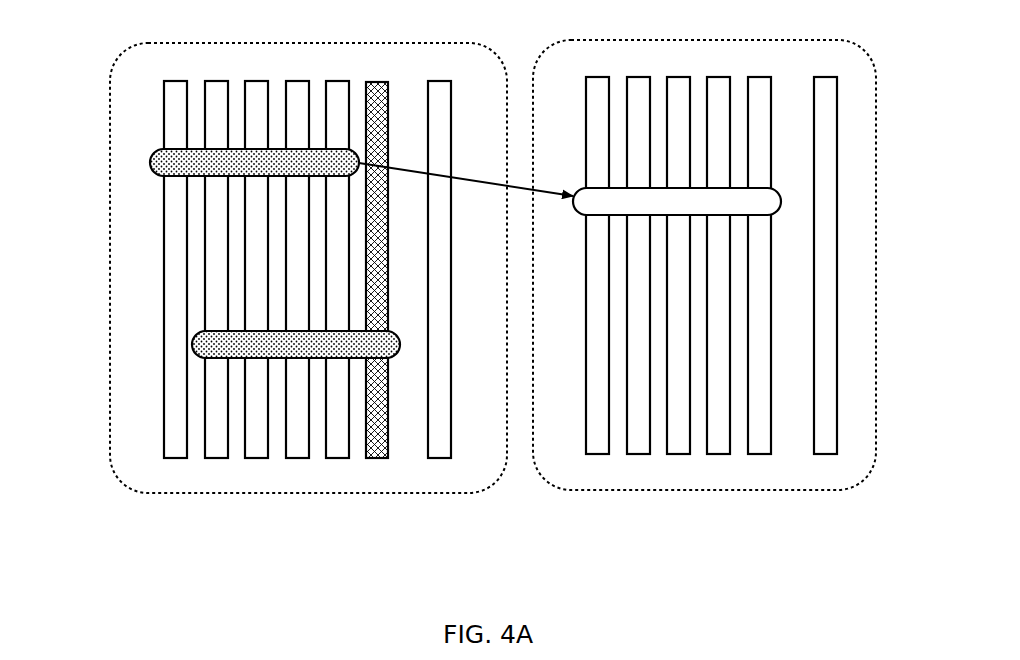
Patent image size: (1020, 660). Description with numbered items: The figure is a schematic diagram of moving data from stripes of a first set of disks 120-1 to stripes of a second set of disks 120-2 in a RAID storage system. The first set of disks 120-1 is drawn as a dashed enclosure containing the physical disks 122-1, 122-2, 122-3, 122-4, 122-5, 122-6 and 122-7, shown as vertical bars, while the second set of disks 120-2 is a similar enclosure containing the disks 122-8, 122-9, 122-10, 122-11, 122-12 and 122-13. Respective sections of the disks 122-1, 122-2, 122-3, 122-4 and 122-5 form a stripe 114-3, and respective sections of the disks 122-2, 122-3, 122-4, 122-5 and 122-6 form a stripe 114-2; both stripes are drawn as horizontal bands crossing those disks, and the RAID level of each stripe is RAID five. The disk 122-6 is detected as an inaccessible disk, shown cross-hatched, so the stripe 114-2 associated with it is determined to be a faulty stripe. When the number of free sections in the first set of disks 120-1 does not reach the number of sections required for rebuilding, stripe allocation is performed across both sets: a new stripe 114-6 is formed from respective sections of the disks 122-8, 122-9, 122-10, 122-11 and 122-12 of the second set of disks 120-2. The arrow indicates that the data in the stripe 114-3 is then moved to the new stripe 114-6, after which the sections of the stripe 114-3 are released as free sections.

The first set of disks 120-1 is at (145, 43).
The second set of disks 120-2 is at (565, 40).
The stripe 114-3 is at (152, 162).
The stripe 114-2 is at (193, 340).
The new stripe 114-6 is at (781, 197).
The disk 122-1 is at (175, 458).
The disk 122-2 is at (216, 458).
The disk 122-3 is at (258, 458).
The disk 122-4 is at (300, 458).
The disk 122-5 is at (340, 458).
The disk 122-6 is at (378, 458).
The disk 122-7 is at (438, 458).
The disk 122-8 is at (597, 454).
The disk 122-9 is at (638, 454).
The disk 122-10 is at (678, 454).
The disk 122-11 is at (718, 454).
The disk 122-12 is at (757, 454).
The disk 122-13 is at (824, 454).